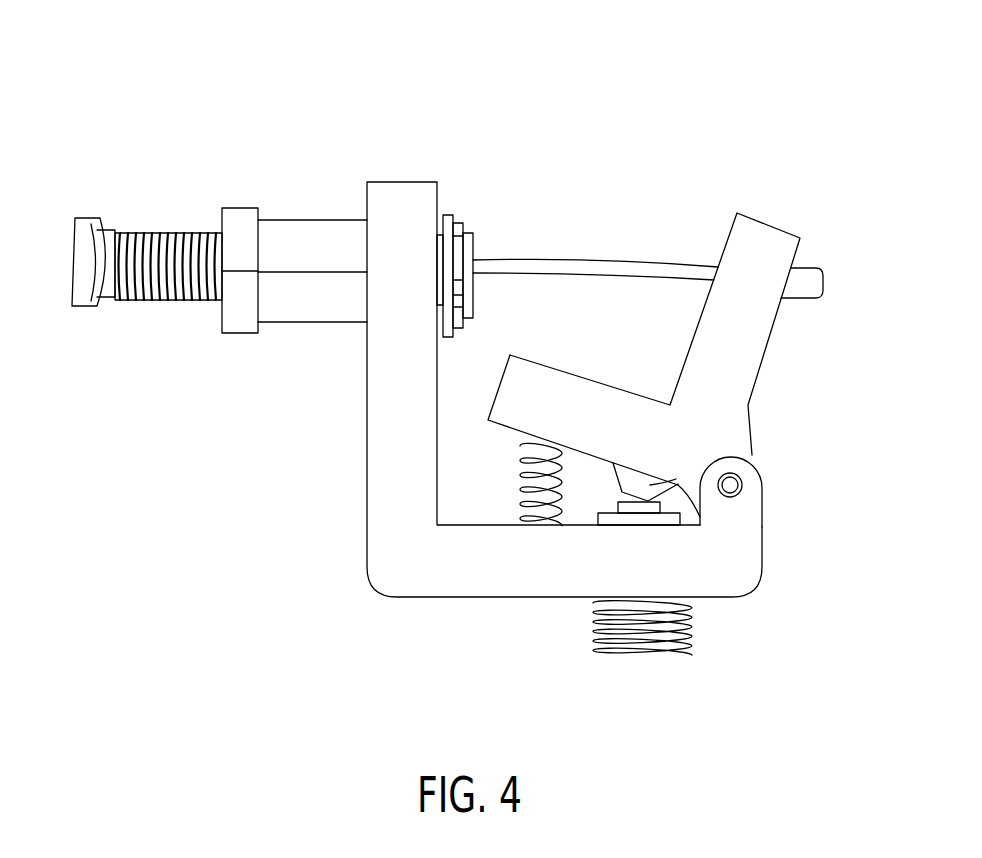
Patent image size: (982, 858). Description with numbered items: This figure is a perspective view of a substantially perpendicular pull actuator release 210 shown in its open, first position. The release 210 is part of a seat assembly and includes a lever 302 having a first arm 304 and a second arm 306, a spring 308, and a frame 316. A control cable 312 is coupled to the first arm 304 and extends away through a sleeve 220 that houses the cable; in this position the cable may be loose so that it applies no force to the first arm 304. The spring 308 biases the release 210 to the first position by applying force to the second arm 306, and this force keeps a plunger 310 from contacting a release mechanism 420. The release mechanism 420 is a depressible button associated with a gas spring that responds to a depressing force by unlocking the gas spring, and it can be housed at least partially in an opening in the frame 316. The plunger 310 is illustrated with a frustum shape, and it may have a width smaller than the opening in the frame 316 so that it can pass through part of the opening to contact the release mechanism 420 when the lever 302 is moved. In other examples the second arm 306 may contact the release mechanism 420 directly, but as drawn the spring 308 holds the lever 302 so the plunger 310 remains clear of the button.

The perpendicular pull actuator release 210 is at (414, 84).
The sleeve 220 is at (156, 233).
The lever 302 is at (702, 420).
The first arm 304 is at (780, 243).
The second arm 306 is at (620, 447).
The spring 308 is at (533, 507).
The plunger 310 is at (678, 485).
The control cable 312 is at (608, 267).
The frame 316 is at (405, 562).
The release mechanism 420 is at (640, 513).